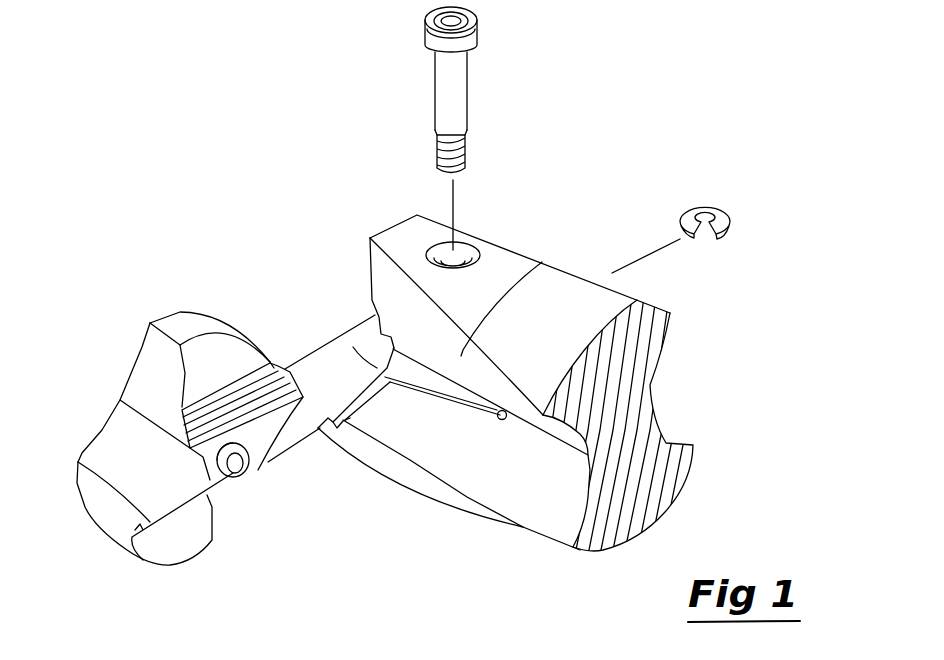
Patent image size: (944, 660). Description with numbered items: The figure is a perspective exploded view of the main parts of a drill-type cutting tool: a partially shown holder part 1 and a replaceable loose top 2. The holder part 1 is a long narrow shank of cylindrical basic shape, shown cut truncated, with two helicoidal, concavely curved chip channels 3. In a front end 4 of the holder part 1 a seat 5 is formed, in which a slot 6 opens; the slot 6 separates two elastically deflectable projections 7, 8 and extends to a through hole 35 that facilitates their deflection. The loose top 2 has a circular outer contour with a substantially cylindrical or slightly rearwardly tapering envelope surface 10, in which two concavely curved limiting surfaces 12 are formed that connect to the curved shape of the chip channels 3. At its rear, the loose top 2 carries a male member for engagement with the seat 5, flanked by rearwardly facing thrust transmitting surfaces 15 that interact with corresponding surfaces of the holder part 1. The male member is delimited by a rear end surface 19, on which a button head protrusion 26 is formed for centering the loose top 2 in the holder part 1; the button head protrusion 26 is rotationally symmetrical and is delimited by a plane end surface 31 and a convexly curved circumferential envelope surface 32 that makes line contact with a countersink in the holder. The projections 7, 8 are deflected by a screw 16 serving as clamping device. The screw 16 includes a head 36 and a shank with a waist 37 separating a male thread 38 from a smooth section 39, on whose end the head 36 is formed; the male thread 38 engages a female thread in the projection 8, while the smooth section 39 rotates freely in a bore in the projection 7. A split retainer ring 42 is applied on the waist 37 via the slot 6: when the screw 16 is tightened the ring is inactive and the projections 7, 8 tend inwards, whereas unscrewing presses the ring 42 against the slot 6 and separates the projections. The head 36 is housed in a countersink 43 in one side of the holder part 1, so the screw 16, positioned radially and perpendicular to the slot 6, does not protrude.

The holder part 1 is at (489, 402).
The loose top 2 is at (176, 453).
The chip channels 3 is at (667, 432).
The front end 4 is at (389, 216).
The seat 5 is at (353, 347).
The slot 6 is at (467, 408).
The projection 7 is at (542, 262).
The projection 8 is at (427, 440).
The envelope surface 10 is at (180, 313).
The limiting surfaces 12 is at (137, 387).
The thrust transmitting surfaces 15 is at (155, 455).
The screw 16 is at (440, 97).
The rear end surface 19 is at (265, 432).
The button head protrusion 26 is at (246, 474).
The plane end surface 31 is at (237, 485).
The envelope surface 32 is at (217, 468).
The through hole 35 is at (505, 421).
The head 36 is at (478, 32).
The waist 37 is at (468, 136).
The male thread 38 is at (467, 152).
The smooth section 39 is at (467, 90).
The split retainer ring 42 is at (718, 205).
The countersink 43 is at (470, 247).